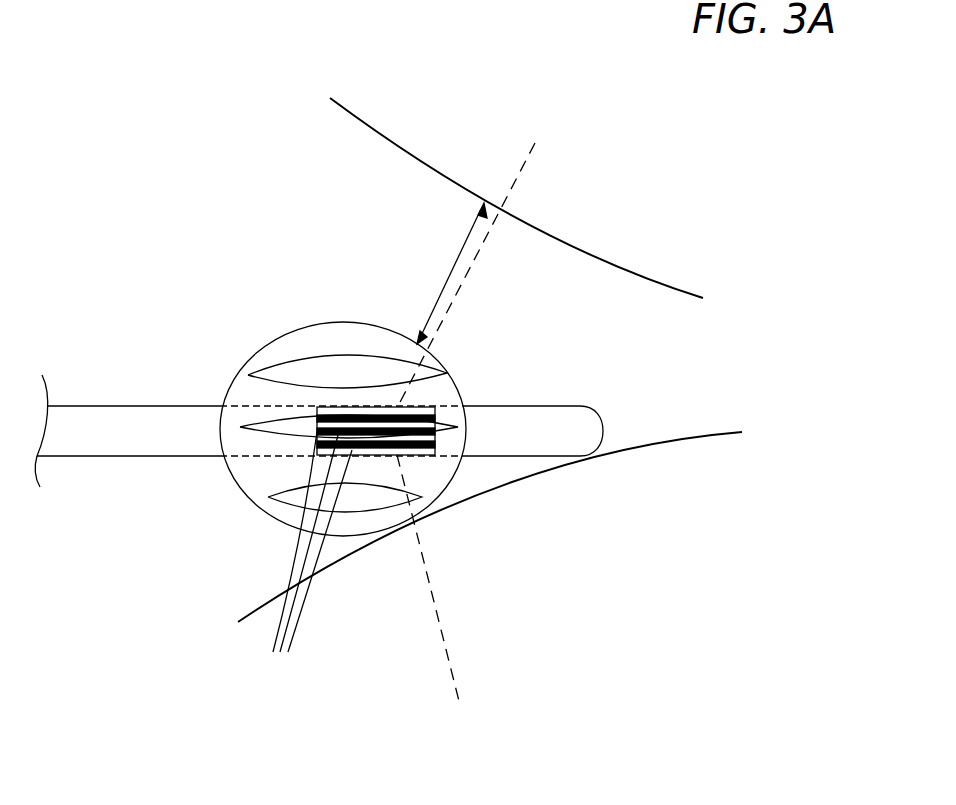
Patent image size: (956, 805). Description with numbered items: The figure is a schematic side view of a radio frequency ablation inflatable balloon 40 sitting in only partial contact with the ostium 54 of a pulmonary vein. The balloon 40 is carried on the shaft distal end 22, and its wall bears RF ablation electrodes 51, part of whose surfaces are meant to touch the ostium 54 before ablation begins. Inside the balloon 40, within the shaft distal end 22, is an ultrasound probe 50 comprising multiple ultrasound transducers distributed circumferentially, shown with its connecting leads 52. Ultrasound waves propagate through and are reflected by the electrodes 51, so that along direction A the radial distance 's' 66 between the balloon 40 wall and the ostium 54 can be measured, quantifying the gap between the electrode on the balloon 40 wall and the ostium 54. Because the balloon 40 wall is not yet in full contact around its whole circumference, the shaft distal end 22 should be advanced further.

The shaft distal end 22 is at (128, 456).
The balloon 40 is at (240, 285).
The ultrasound probe 50 is at (372, 468).
The RF ablation electrodes 51 is at (270, 372).
The electrical leads 52 is at (307, 557).
The ostium 54 is at (633, 272).
The radial distance 's' 66 is at (476, 232).